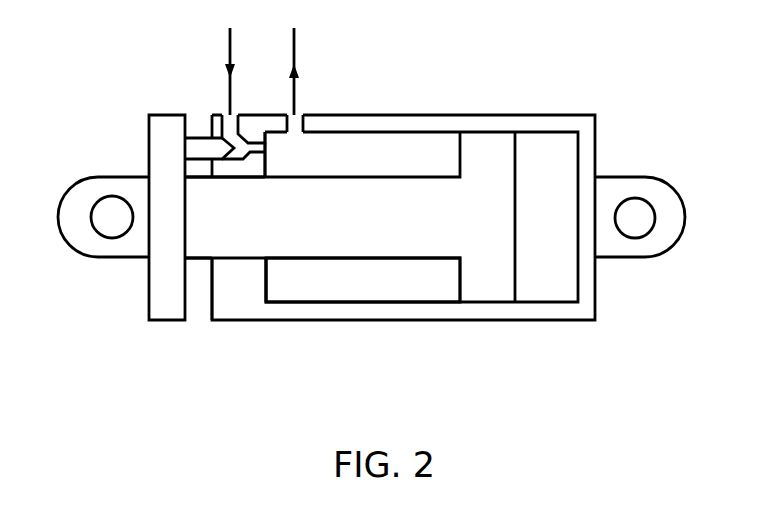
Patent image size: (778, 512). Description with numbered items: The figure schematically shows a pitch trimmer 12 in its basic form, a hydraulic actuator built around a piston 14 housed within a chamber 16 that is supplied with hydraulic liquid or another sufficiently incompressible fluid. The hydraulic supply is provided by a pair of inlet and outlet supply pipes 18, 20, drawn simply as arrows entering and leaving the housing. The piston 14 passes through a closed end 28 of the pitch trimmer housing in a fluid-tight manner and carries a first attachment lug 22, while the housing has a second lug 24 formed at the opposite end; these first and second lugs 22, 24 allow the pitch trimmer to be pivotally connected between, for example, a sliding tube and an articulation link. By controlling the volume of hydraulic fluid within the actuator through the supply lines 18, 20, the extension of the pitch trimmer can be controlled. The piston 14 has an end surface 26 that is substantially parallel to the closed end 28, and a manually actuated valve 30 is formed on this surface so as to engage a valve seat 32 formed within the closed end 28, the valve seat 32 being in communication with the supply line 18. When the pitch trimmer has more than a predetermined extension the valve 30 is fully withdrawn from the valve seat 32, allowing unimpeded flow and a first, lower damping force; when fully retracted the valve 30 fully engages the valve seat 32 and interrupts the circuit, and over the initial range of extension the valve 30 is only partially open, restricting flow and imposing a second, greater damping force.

The pitch trimmer 12 is at (513, 54).
The piston 14 is at (392, 237).
The chamber 16 is at (388, 293).
The inlet supply pipe 18 is at (228, 45).
The outlet supply pipe 20 is at (295, 45).
The first attachment lug 22 is at (82, 200).
The second lug 24 is at (658, 243).
The end surface 26 is at (197, 125).
The closed end 28 is at (235, 295).
The manually actuated valve 30 is at (196, 150).
The valve seat 32 is at (253, 168).